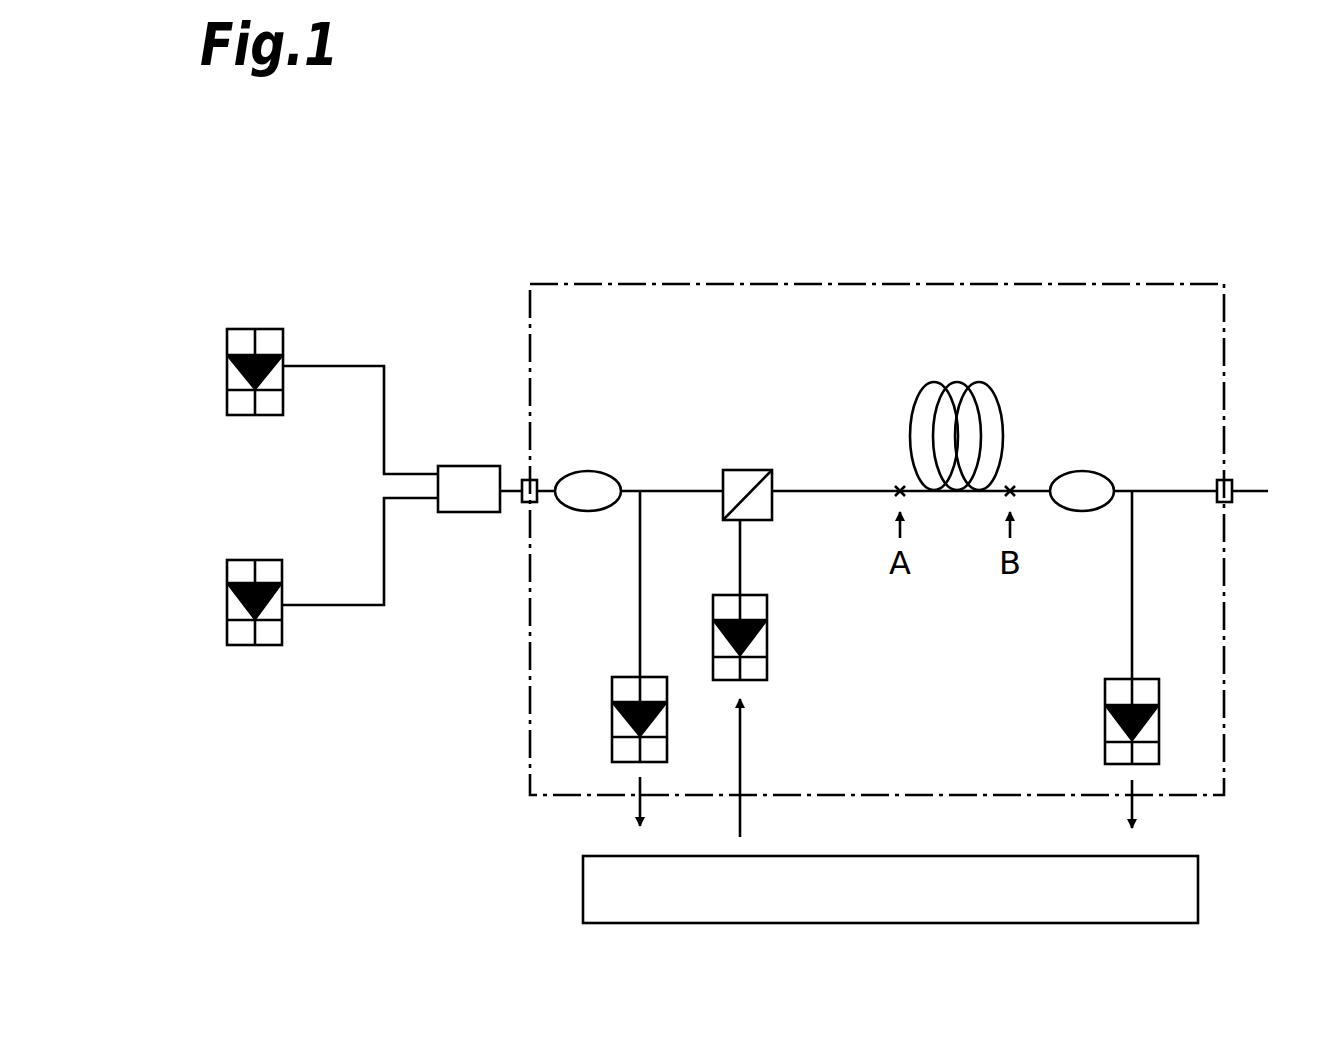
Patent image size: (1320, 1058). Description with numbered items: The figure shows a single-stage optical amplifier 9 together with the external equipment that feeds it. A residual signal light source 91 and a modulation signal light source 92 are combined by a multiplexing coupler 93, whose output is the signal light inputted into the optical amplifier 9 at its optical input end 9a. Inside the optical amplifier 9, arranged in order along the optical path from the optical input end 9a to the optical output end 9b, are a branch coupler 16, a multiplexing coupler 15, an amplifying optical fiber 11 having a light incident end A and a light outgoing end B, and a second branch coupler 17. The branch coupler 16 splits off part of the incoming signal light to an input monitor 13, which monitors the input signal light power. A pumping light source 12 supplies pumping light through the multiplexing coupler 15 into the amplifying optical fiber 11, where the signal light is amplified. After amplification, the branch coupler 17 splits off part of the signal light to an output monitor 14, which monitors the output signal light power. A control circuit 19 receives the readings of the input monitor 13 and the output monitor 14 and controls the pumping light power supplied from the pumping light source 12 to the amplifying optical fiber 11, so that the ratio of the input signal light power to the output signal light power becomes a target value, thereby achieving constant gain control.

The optical amplifier 9 is at (1214, 183).
The optical input end 9a is at (528, 478).
The optical output end 9b is at (1225, 480).
The amplifying optical fiber 11 is at (978, 382).
The pumping light source 12 is at (767, 605).
The input monitor 13 is at (627, 677).
The output monitor 14 is at (1117, 679).
The multiplexing coupler 15 is at (750, 470).
The branch coupler 16 is at (588, 470).
The branch coupler 17 is at (1082, 471).
The control circuit 19 is at (1198, 887).
The residual signal light source 91 is at (227, 343).
The modulation signal light source 92 is at (227, 573).
The multiplexing coupler 93 is at (468, 513).